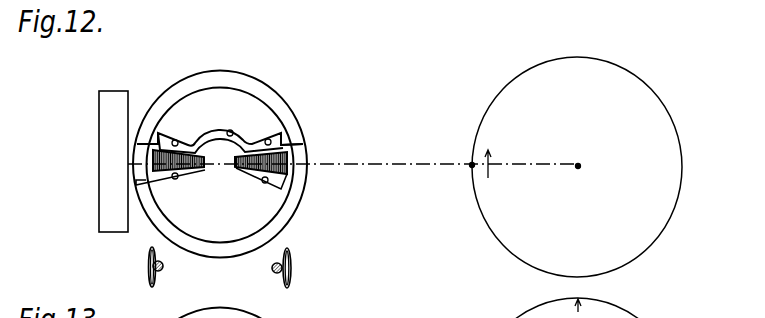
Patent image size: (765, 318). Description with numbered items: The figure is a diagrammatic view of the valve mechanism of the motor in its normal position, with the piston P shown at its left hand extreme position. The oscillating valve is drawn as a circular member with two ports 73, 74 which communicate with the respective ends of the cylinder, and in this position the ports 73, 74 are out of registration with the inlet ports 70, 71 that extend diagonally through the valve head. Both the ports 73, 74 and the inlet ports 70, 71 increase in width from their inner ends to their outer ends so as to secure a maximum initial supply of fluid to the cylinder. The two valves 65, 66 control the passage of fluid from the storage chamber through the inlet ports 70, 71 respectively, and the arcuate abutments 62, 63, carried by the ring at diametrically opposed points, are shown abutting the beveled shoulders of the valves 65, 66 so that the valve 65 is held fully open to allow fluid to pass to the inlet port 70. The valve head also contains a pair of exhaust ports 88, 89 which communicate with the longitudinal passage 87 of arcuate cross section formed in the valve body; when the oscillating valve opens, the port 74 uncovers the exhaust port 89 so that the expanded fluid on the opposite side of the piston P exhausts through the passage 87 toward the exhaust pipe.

The piston P is at (117, 98).
The abutment 62 is at (150, 283).
The abutment 63 is at (291, 277).
The valve 65 is at (163, 270).
The valve 66 is at (272, 272).
The inlet port 70 is at (136, 178).
The inlet port 71 is at (266, 183).
The port 73 is at (173, 179).
The port 74 is at (286, 141).
The longitudinal passage 87 is at (232, 131).
The exhaust port 88 is at (177, 141).
The exhaust port 89 is at (270, 140).